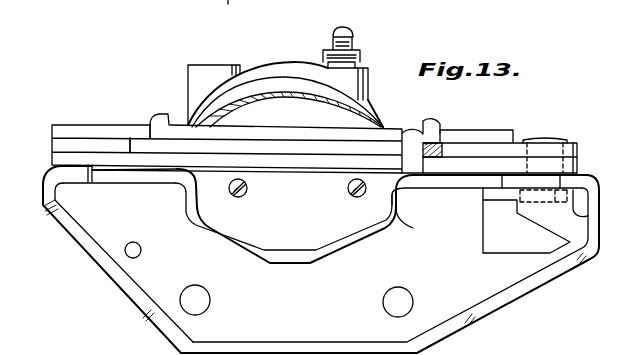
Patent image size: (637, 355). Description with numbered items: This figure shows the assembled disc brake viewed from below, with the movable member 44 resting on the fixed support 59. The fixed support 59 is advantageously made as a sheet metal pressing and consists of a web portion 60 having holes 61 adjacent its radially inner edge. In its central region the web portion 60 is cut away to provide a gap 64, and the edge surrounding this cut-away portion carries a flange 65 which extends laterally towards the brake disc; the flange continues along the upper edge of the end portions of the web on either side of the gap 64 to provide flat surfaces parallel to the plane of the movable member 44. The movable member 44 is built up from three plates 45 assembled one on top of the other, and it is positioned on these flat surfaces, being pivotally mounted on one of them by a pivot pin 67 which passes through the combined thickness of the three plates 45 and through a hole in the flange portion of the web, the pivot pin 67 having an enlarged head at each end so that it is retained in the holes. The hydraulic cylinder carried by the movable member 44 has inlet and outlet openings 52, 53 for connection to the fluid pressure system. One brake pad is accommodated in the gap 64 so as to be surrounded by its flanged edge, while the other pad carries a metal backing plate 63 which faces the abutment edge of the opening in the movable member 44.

The movable member 44 is at (140, 125).
The plates 45 is at (96, 127).
The inlet opening 52 is at (215, 72).
The outlet opening 53 is at (353, 44).
The fixed support 59 is at (453, 329).
The web portion 60 is at (143, 279).
The holes 61 is at (382, 303).
The metal backing plate 63 is at (283, 240).
The gap 64 is at (405, 212).
The flange 65 is at (192, 223).
The pivot pin 67 is at (552, 139).